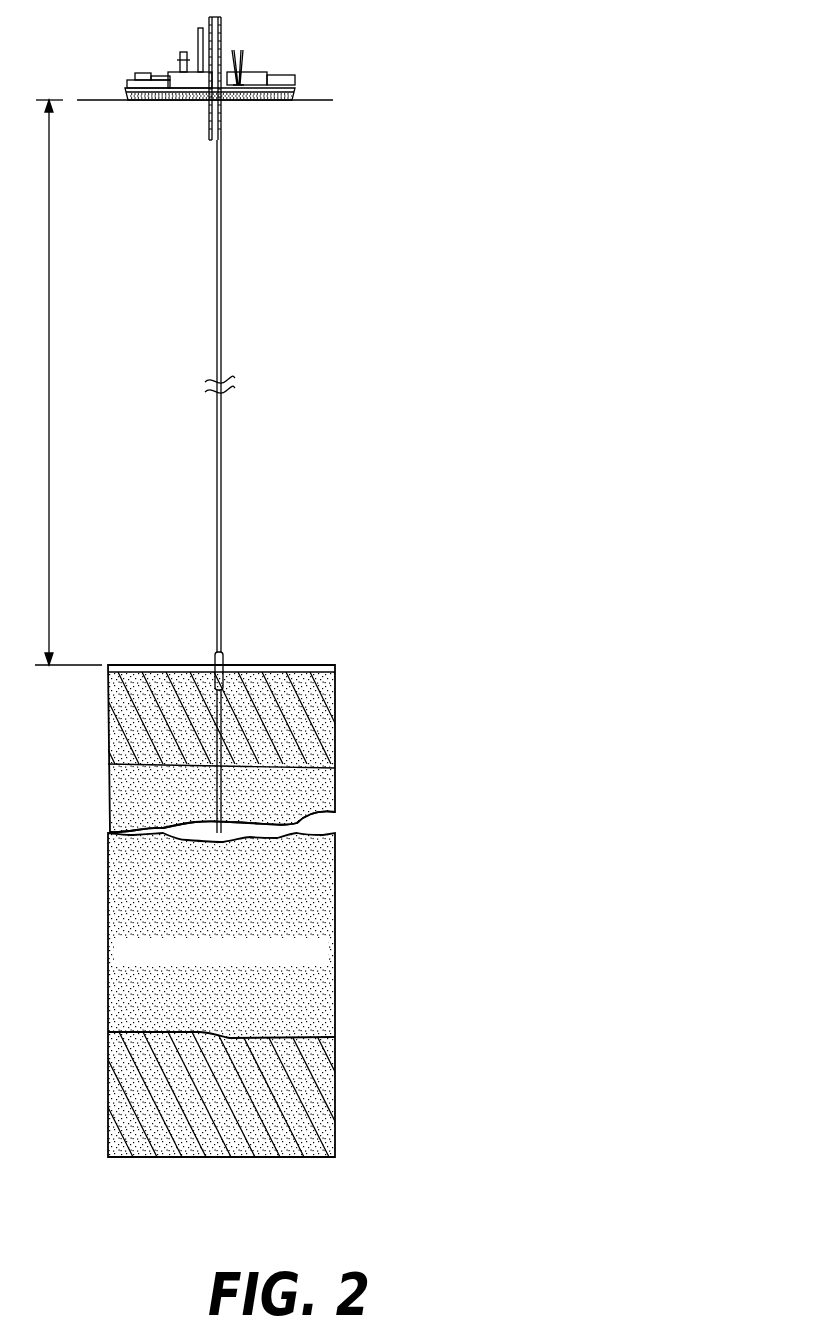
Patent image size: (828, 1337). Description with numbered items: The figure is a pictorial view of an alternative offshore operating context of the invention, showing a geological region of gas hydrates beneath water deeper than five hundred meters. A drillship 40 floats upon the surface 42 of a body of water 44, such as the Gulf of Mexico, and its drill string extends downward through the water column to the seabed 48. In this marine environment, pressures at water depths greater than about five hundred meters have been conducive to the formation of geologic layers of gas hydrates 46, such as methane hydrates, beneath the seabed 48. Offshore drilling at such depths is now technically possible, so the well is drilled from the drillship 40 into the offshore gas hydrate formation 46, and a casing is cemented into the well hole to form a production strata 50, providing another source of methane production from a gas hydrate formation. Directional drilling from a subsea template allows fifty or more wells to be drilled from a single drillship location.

The drillship 40 is at (256, 72).
The surface 42 is at (112, 100).
The body of water 44 is at (387, 342).
The gas hydrates 46 is at (323, 918).
The seabed 48 is at (110, 678).
The production strata 50 is at (335, 812).